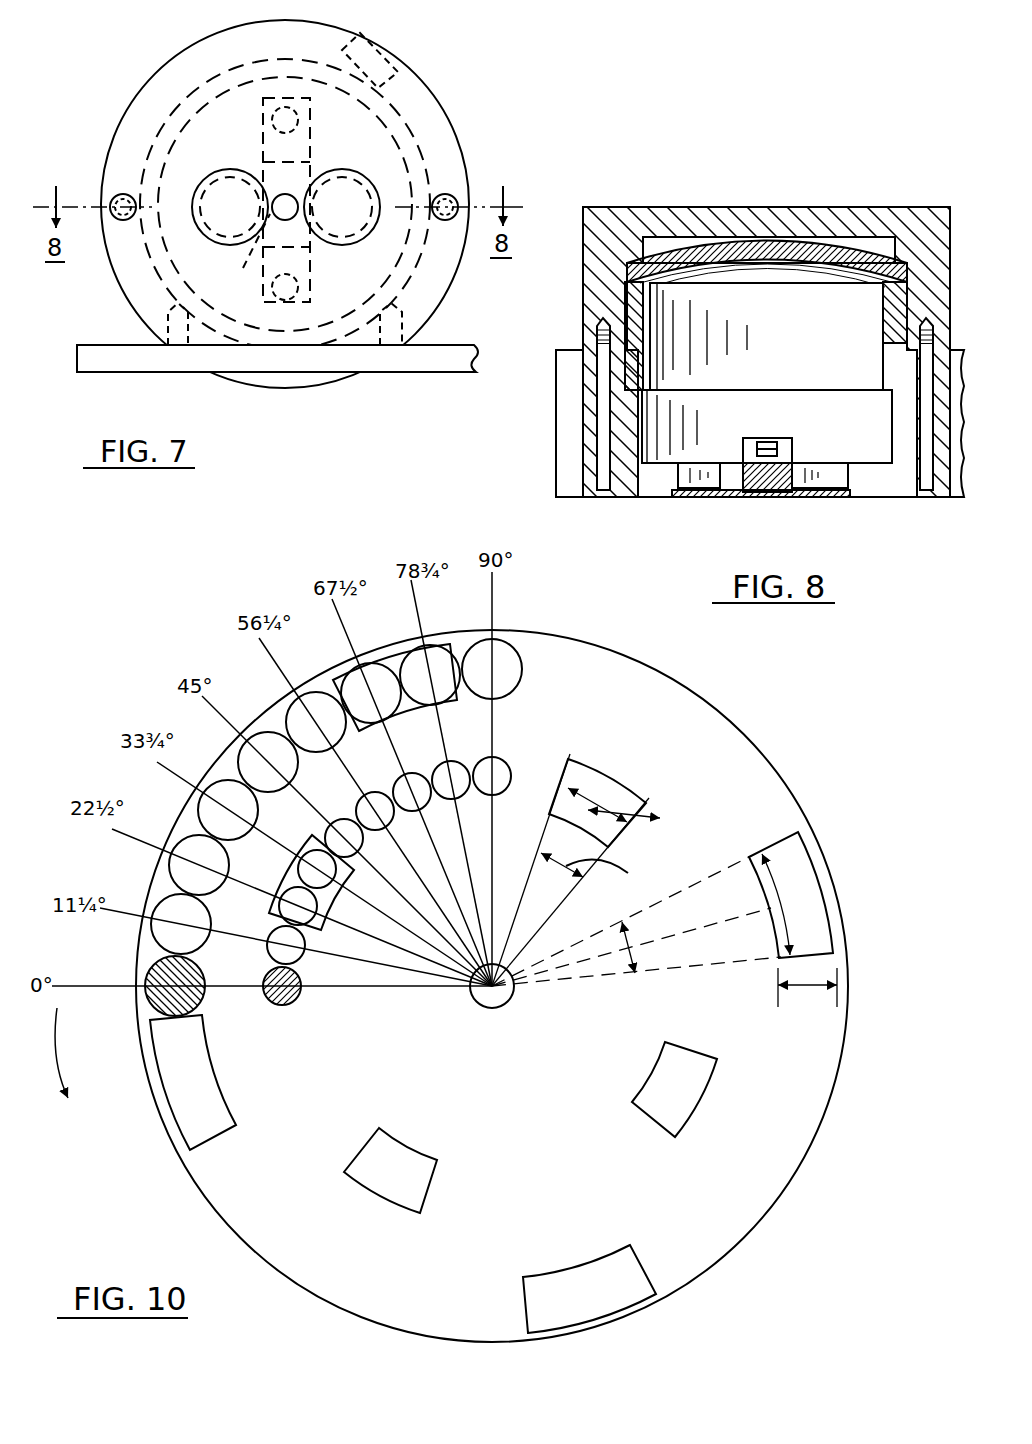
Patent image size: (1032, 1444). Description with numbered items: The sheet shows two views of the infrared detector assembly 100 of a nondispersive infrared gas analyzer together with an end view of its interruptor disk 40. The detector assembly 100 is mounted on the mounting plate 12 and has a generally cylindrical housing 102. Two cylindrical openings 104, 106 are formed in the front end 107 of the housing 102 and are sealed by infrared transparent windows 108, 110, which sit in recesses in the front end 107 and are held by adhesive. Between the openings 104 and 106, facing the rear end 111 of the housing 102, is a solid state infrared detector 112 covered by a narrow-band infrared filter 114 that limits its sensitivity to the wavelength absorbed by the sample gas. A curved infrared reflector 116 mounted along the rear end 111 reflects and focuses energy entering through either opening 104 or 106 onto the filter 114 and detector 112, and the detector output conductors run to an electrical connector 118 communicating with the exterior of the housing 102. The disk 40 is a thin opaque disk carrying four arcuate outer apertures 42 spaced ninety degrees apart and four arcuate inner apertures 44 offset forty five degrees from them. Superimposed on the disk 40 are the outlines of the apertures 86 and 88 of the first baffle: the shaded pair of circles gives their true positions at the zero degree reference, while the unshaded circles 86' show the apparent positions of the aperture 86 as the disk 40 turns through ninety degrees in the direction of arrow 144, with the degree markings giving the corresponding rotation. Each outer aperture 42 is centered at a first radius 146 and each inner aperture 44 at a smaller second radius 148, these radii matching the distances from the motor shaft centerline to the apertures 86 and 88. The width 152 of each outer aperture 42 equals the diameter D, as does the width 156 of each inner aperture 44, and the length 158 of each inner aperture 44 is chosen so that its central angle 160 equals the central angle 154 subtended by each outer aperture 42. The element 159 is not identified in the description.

In FIG. 7, the mounting plate 12 is at (447, 362).
In FIG. 8, the mounting plate 12 is at (556, 438).
In FIG. 10, the interruptor disk 40 is at (813, 1143).
In FIG. 10, the outer apertures 42 is at (398, 650).
In FIG. 10, the inner apertures 44 is at (303, 852).
In FIG. 10, the aperture 86 is at (140, 977).
In FIG. 10, the apparent positions of aperture 86' is at (149, 893).
In FIG. 10, the aperture 88 is at (303, 956).
In FIG. 7, the infrared detector assembly 100 is at (108, 60).
In FIG. 8, the infrared detector assembly 100 is at (730, 156).
In FIG. 7, the housing 102 is at (127, 123).
In FIG. 8, the housing 102 is at (580, 230).
In FIG. 7, the cylindrical opening 104 is at (218, 242).
In FIG. 8, the cylindrical opening 104 is at (687, 472).
In FIG. 7, the cylindrical opening 106 is at (356, 238).
In FIG. 8, the cylindrical opening 106 is at (849, 478).
In FIG. 8, the front end 107 is at (638, 498).
In FIG. 7, the infrared transparent window 108 is at (222, 190).
In FIG. 8, the infrared transparent window 108 is at (697, 498).
In FIG. 7, the infrared transparent window 110 is at (343, 190).
In FIG. 8, the infrared transparent window 110 is at (823, 498).
In FIG. 8, the rear end 111 is at (867, 207).
In FIG. 7, the solid state infrared detector 112 is at (242, 266).
In FIG. 8, the solid state infrared detector 112 is at (780, 448).
In FIG. 8, the narrow-band infrared filter 114 is at (750, 438).
In FIG. 8, the curved infrared reflector 116 is at (836, 268).
In FIG. 7, the electrical connector 118 is at (370, 38).
In FIG. 10, the arrow 144 is at (58, 1040).
In FIG. 10, the first radius 146 is at (673, 933).
In FIG. 10, the second radius 148 is at (578, 840).
In FIG. 10, the width 152 is at (807, 990).
In FIG. 10, the central angle 154 is at (637, 960).
In FIG. 10, the width 156 is at (661, 820).
In FIG. 10, the length 158 is at (630, 820).
In FIG. 10, the holder corner 159 is at (800, 850).
In FIG. 10, the central angle 160 is at (601, 882).